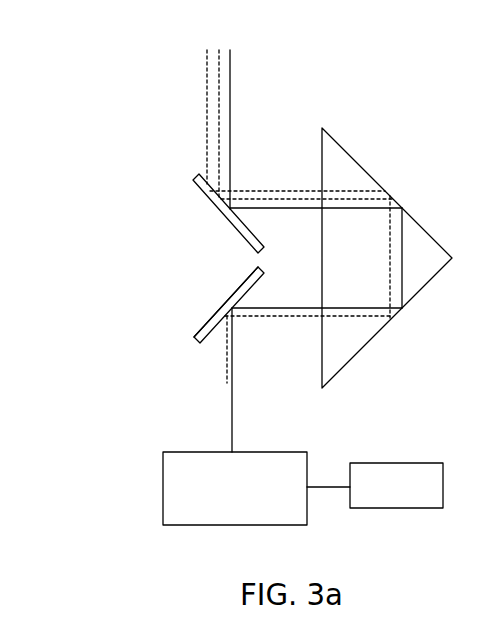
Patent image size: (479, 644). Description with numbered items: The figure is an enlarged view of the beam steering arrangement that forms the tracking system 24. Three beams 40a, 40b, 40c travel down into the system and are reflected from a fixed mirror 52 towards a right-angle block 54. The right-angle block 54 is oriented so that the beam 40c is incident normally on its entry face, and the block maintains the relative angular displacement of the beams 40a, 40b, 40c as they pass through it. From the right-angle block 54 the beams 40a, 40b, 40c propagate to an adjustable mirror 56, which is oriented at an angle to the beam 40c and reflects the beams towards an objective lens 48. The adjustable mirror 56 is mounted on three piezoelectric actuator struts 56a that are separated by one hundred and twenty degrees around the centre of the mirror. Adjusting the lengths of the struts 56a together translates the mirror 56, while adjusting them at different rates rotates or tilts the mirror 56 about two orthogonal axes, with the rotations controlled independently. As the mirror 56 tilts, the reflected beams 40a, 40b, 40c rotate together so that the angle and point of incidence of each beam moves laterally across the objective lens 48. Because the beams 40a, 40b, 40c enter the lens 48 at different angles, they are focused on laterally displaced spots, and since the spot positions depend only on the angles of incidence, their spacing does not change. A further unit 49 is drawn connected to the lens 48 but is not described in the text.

The tracking system 24 is at (125, 365).
The beam 40a is at (224, 128).
The beam 40b is at (206, 86).
The beam 40c is at (232, 74).
The objective lens 48 is at (163, 503).
The evaluation unit 49 is at (394, 508).
The fixed mirror 52 is at (201, 204).
The right-angle block 54 is at (357, 164).
The adjustable mirror 56 is at (199, 337).
The piezoelectric actuator struts 56a is at (244, 274).